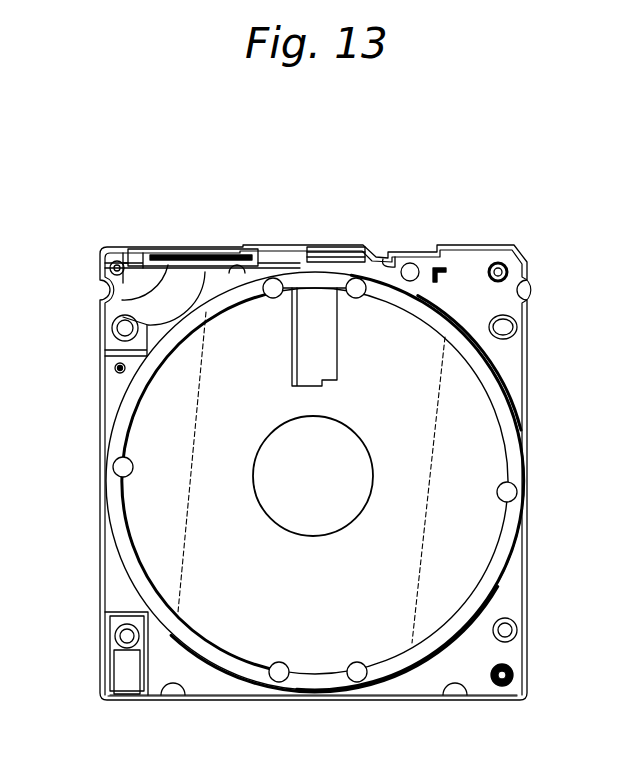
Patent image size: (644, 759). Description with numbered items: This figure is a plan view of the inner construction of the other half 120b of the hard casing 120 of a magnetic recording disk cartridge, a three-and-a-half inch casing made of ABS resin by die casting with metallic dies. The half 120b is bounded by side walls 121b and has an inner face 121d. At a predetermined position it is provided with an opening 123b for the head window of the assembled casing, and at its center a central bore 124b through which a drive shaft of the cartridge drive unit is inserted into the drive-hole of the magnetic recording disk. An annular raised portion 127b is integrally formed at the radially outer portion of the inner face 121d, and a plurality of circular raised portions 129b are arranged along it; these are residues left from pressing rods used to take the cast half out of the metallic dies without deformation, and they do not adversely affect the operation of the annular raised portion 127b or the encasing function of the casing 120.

The hard casing 120 is at (219, 239).
The other half of the casing 120b is at (322, 703).
The side walls 121b is at (527, 331).
The inner face 121d is at (259, 418).
The opening for the head window 123b is at (335, 386).
The central bore 124b is at (290, 533).
The annular raised portion 127b is at (498, 398).
The circular raised portions 129b is at (113, 470).